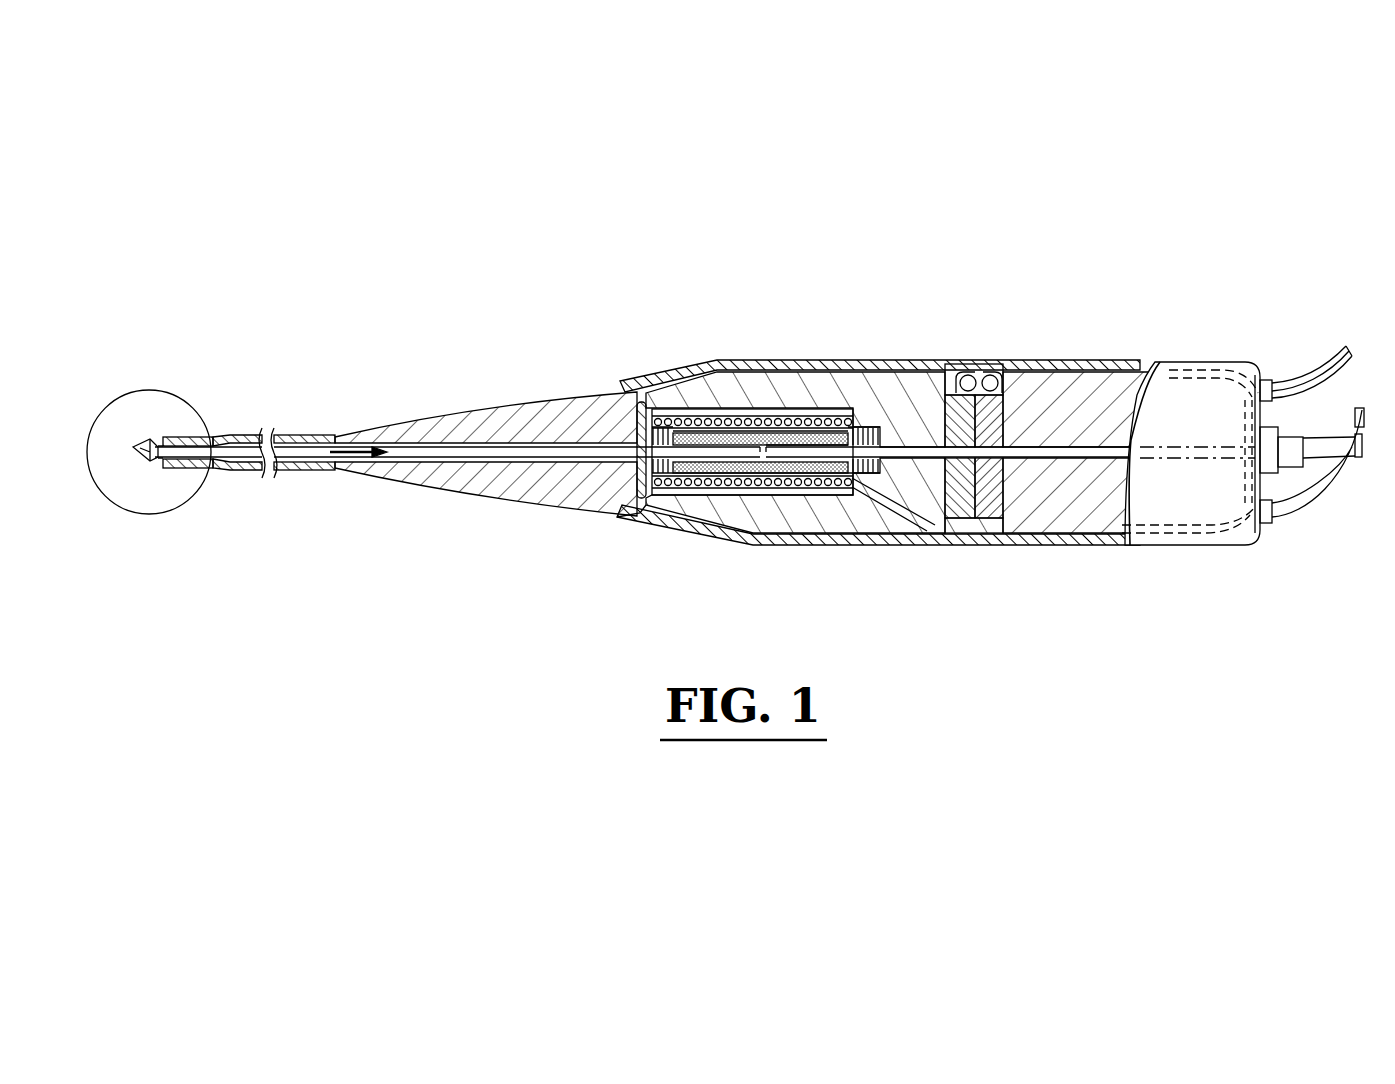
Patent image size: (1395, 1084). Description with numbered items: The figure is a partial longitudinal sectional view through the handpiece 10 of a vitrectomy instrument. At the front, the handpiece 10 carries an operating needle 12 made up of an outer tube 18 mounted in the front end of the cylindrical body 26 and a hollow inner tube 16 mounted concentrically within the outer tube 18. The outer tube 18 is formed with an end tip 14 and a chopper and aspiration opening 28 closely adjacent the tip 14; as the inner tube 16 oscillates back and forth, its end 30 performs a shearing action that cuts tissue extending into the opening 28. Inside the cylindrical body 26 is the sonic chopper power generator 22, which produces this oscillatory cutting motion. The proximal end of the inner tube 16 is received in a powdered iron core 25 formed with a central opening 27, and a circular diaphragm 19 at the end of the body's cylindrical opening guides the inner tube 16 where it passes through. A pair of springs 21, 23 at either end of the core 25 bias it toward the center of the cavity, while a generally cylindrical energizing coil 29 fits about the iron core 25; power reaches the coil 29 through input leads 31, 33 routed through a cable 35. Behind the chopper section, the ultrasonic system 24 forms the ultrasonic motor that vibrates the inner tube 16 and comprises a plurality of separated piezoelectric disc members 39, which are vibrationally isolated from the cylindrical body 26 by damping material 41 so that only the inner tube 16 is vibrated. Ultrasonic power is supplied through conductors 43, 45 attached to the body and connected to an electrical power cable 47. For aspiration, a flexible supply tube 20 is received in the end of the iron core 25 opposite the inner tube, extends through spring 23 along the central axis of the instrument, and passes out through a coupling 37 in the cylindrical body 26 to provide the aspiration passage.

The handpiece 10 is at (486, 587).
The operating needle 12 is at (178, 467).
The tip 14 is at (143, 455).
The inner tube 16 is at (230, 443).
The outer tube 18 is at (307, 470).
The circular diaphragm 19 is at (622, 435).
The flexible supply tube 20 is at (1206, 452).
The spring 21 is at (670, 447).
The sonic chopper power generator 22 is at (755, 412).
The spring 23 is at (893, 513).
The ultrasonic system 24 is at (932, 415).
The powdered iron core 25 is at (743, 465).
The cylindrical body 26 is at (890, 366).
The central opening 27 is at (770, 453).
The chopper and aspiration opening 28 is at (160, 435).
The energizing coil 29 is at (777, 418).
The end 30 is at (140, 457).
The input lead 31 is at (917, 523).
The input lead 33 is at (626, 515).
The cable 35 is at (1322, 500).
The coupling 37 is at (1288, 433).
The piezoelectric disc members 39 is at (977, 420).
The damping material 41 is at (983, 384).
The conductor 43 is at (963, 378).
The conductor 45 is at (1127, 597).
The electrical power cable 47 is at (1320, 377).